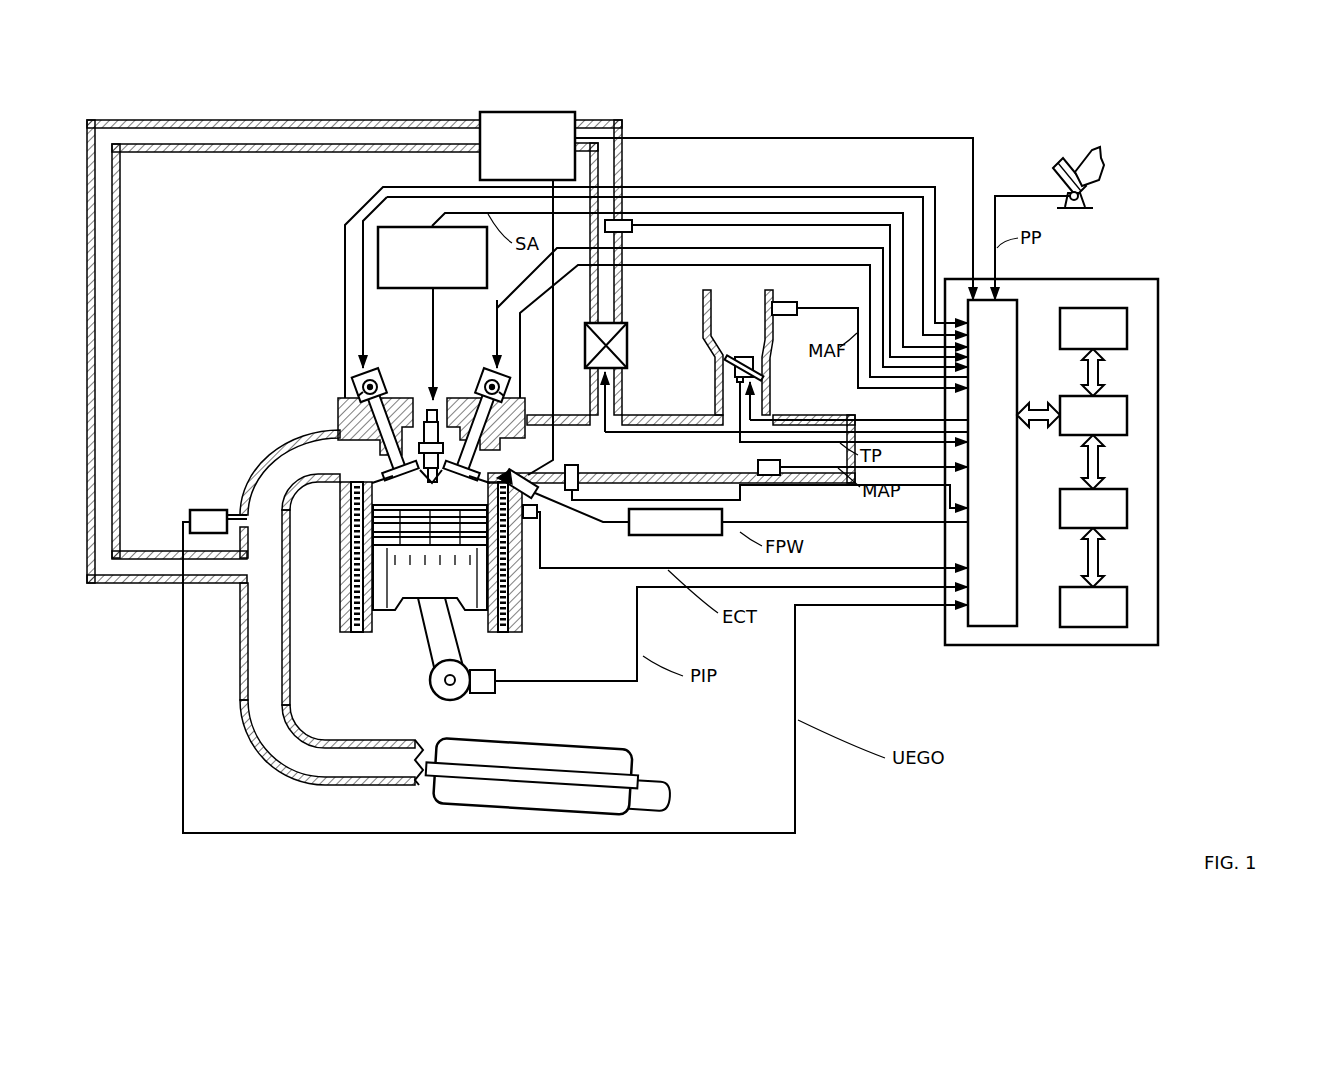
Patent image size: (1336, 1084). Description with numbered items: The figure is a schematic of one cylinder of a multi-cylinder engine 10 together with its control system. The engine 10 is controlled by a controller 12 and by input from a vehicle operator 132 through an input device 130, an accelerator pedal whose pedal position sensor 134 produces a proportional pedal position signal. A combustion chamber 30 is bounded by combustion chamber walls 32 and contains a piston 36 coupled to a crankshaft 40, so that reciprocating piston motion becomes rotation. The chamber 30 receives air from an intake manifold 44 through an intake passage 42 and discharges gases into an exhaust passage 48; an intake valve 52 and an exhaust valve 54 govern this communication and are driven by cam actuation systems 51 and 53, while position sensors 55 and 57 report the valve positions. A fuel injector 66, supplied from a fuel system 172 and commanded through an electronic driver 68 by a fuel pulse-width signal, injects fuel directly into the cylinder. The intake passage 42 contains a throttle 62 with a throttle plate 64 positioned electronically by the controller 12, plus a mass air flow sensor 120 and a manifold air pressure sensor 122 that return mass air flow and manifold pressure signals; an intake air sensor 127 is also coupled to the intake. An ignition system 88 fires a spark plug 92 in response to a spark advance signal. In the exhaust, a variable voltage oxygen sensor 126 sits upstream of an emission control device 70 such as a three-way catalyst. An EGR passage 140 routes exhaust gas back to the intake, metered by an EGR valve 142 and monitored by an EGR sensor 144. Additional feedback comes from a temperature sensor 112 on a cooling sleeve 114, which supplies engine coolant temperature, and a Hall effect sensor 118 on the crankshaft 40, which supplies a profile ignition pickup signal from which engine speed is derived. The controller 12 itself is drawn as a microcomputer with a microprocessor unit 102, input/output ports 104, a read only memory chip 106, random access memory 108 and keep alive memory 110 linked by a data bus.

The engine 10 is at (272, 352).
The controller 12 is at (1093, 450).
The combustion chamber 30 is at (350, 582).
The combustion chamber walls 32 is at (372, 632).
The piston 36 is at (418, 585).
The crankshaft 40 is at (442, 700).
The intake passage 42 is at (752, 333).
The intake manifold 44 is at (693, 463).
The exhaust passage 48 is at (316, 468).
The cam actuation system 51 is at (483, 368).
The intake valve 52 is at (500, 466).
The cam actuation system 53 is at (370, 372).
The exhaust valve 54 is at (393, 471).
The position sensor 55 is at (506, 385).
The position sensor 57 is at (360, 396).
The throttle 62 is at (762, 372).
The throttle plate 64 is at (725, 366).
The fuel injector 66 is at (545, 492).
The electronic driver 68 is at (652, 537).
The emission control device 70 is at (600, 742).
The ignition system 88 is at (388, 228).
The spark plug 92 is at (438, 411).
The microprocessor unit 102 is at (1128, 420).
The input/output ports 104 is at (1018, 312).
The read only memory chip 106 is at (1128, 322).
The random access memory 108 is at (1128, 507).
The keep alive memory 110 is at (1128, 607).
The temperature sensor 112 is at (540, 520).
The cooling sleeve 114 is at (505, 590).
The Hall effect sensor 118 is at (488, 696).
The mass air flow sensor 120 is at (795, 302).
The manifold air pressure sensor 122 is at (775, 478).
The variable voltage oxygen sensor 126 is at (190, 514).
The intake air sensor 127 is at (575, 468).
The input device 130 is at (1057, 175).
The vehicle operator 132 is at (1100, 162).
The pedal position sensor 134 is at (1088, 201).
The EGR passage 140 is at (348, 121).
The EGR valve 142 is at (622, 345).
The EGR sensor 144 is at (627, 233).
The fuel system 172 is at (540, 113).